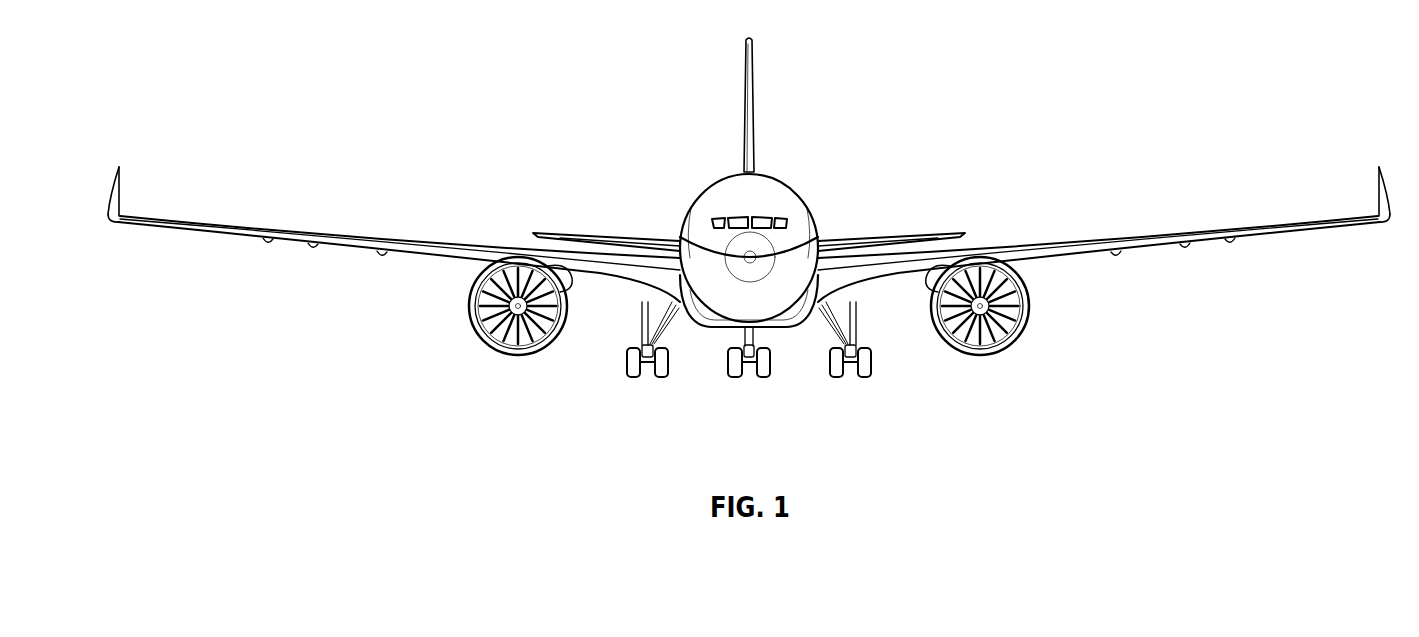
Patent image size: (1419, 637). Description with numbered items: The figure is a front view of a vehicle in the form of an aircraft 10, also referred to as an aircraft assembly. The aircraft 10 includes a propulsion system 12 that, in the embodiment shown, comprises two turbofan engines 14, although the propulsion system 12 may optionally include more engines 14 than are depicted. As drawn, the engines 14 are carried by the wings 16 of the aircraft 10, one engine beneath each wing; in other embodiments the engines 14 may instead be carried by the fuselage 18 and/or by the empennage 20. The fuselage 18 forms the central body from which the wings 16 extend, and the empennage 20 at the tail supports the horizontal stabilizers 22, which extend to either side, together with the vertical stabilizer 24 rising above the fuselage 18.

The aircraft 10 is at (566, 68).
The propulsion system 12 is at (474, 355).
The turbofan engines 14 is at (471, 300).
The wings 16 is at (362, 233).
The fuselage 18 is at (793, 180).
The empennage 20 is at (755, 170).
The horizontal stabilizers 22 is at (613, 235).
The vertical stabilizer 24 is at (752, 72).